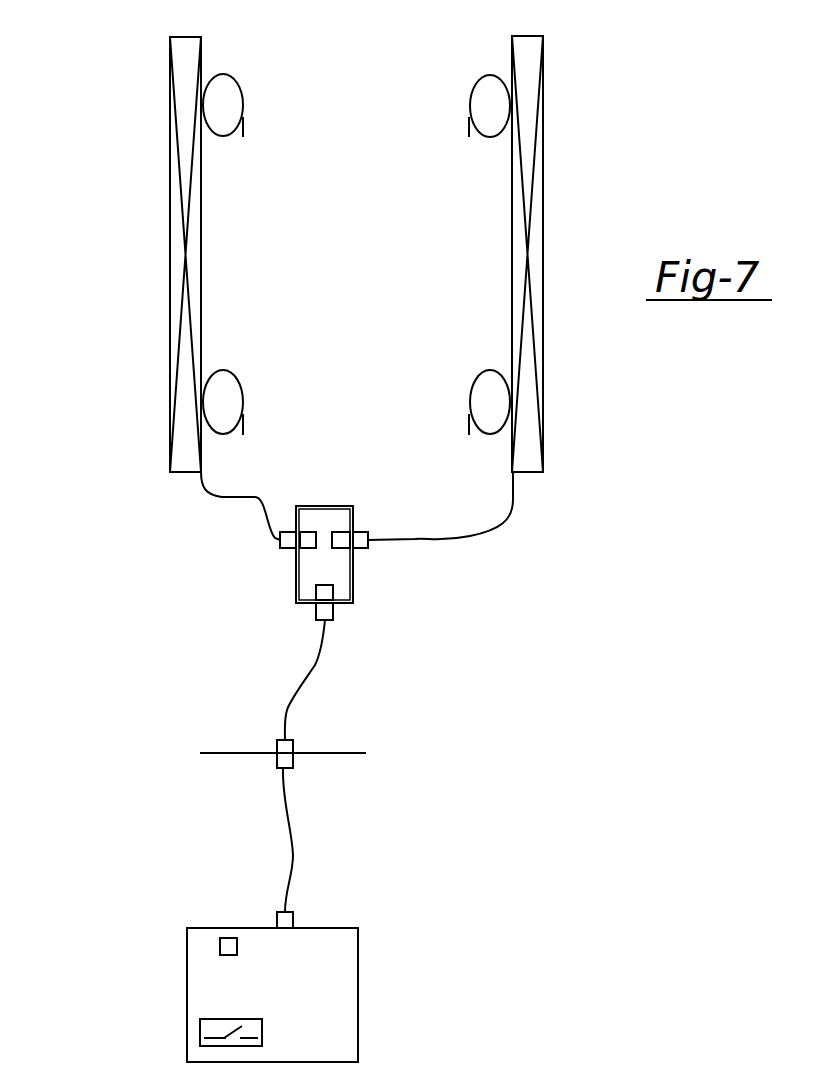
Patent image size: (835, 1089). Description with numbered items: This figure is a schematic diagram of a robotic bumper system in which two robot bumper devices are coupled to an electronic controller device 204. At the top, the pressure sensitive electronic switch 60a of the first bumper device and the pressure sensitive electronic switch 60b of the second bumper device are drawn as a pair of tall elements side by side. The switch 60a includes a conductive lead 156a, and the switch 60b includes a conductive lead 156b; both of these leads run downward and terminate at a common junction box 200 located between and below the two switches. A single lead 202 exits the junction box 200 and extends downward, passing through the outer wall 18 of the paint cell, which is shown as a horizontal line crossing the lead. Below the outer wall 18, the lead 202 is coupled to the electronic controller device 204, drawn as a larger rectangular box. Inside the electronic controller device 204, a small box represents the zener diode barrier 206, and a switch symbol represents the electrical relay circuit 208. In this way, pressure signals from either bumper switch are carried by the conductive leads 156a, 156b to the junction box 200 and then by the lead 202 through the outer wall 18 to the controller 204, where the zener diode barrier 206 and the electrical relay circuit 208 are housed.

The pressure sensitive electronic switch 60a is at (150, 114).
The pressure sensitive electronic switch 60b is at (560, 108).
The conductive lead 156a is at (233, 497).
The conductive lead 156b is at (470, 536).
The junction box 200 is at (328, 506).
The lead 202 is at (315, 663).
The outer wall 18 is at (335, 755).
The electronic controller device 204 is at (325, 945).
The zener diode barrier 206 is at (228, 940).
The electrical relay circuit 208 is at (260, 1028).